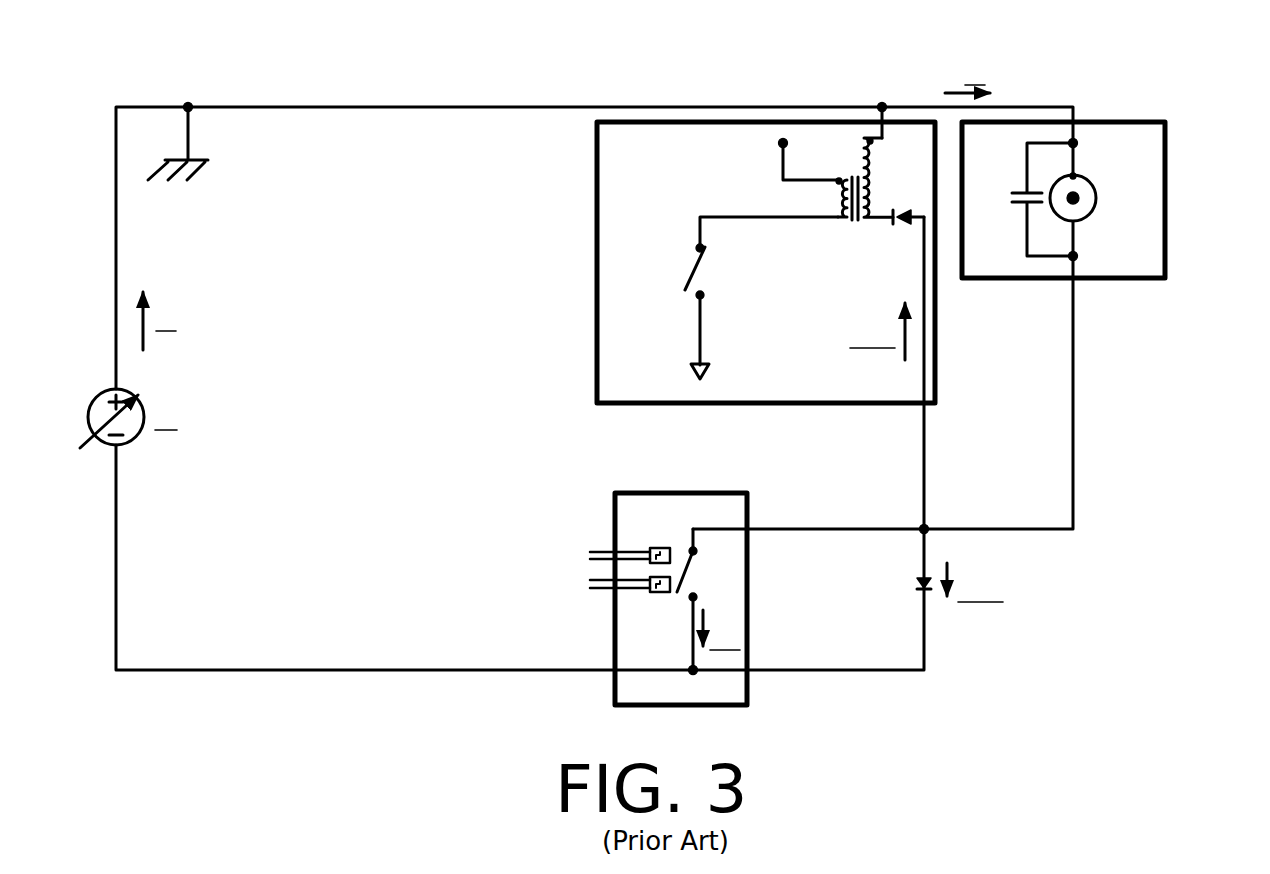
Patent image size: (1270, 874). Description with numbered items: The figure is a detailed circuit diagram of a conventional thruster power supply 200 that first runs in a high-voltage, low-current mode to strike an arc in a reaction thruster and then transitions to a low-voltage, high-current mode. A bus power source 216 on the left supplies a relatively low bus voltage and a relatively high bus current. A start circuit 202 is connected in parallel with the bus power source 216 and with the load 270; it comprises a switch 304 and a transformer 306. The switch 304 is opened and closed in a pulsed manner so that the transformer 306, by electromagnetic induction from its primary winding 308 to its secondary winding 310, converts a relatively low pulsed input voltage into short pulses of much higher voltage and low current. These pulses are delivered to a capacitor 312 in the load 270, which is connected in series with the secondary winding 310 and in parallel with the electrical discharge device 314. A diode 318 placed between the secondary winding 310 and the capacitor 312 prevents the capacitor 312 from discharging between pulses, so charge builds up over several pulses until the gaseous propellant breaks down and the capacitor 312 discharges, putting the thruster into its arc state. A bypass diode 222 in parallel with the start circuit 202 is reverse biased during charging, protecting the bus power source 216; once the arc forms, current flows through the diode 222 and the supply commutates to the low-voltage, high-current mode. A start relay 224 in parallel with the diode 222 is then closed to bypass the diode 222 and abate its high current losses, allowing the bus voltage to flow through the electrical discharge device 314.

The thruster power supply 200 is at (213, 66).
The start circuit 202 is at (716, 262).
The bus power source 216 is at (164, 472).
The diode 222 is at (914, 597).
The start relay 224 is at (691, 517).
The load 270 is at (1111, 195).
The switch 304 is at (749, 282).
The transformer 306 is at (876, 246).
The primary winding 308 is at (836, 211).
The secondary winding 310 is at (924, 183).
The capacitor 312 is at (1005, 210).
The electrical discharge device 314 is at (1121, 256).
The diode 318 is at (888, 243).